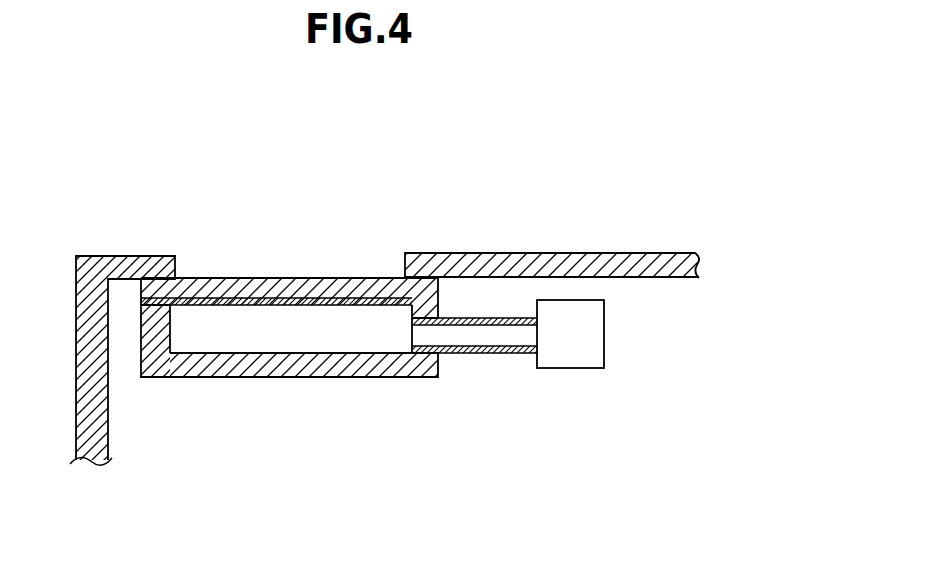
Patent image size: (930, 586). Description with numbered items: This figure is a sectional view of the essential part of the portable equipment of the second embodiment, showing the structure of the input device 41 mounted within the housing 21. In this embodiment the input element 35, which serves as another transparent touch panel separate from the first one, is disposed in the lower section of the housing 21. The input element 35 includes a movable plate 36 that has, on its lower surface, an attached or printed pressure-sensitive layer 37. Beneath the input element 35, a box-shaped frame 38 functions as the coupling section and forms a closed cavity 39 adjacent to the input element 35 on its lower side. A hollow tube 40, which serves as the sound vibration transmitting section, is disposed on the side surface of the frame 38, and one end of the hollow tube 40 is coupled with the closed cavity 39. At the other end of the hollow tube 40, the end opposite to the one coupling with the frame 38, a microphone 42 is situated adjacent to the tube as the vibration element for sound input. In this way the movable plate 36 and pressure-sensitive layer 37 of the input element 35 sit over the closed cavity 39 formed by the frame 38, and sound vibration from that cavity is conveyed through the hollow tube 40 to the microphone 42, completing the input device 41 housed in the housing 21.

The housing 21 is at (598, 258).
The input element 35 is at (248, 498).
The movable plate 36 is at (188, 290).
The pressure-sensitive layer 37 is at (258, 305).
The box-shaped frame 38 is at (307, 366).
The closed cavity 39 is at (353, 338).
The hollow tube 40 is at (490, 337).
The input device 41 is at (322, 268).
The microphone 42 is at (568, 355).